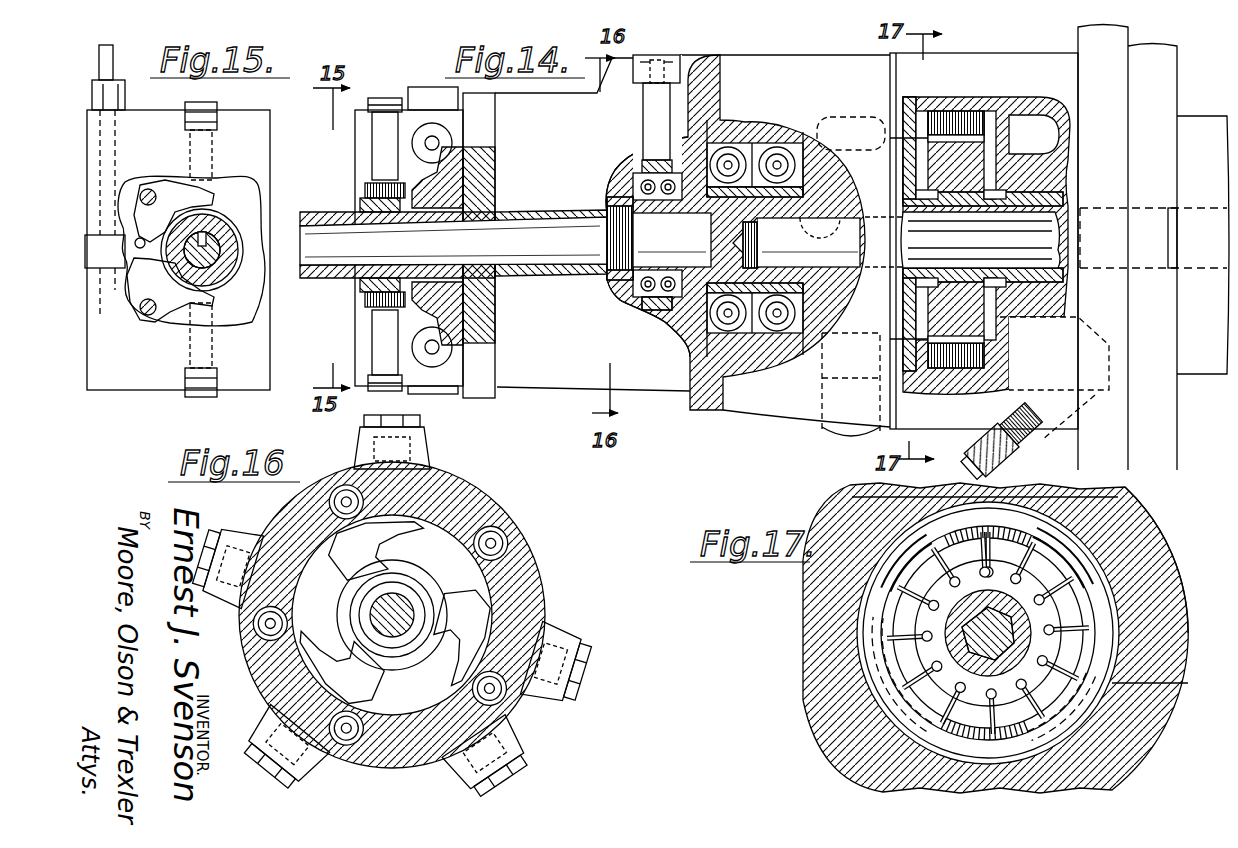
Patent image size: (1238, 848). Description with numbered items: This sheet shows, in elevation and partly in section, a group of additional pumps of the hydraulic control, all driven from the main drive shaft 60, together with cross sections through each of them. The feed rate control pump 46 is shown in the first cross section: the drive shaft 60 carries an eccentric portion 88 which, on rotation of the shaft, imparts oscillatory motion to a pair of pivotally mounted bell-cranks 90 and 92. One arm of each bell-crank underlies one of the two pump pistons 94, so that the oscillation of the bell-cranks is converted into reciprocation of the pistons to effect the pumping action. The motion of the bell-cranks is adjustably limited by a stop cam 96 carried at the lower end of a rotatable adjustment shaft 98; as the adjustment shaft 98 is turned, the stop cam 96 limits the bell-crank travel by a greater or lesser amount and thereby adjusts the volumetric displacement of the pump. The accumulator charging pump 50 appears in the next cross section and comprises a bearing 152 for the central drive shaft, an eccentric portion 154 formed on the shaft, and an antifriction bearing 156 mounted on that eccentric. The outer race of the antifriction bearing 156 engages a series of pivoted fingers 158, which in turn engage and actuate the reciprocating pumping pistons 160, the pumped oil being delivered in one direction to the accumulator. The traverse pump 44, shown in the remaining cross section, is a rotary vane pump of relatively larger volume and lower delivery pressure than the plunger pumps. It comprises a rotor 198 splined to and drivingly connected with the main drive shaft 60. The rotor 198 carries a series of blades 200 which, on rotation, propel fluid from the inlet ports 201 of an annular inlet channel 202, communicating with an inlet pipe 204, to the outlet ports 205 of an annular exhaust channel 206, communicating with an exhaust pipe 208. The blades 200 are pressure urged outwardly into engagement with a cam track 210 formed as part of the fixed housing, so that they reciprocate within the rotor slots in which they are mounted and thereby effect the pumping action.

In FIG. 14, the traverse pump 44 is at (984, 57).
In FIG. 17, the traverse pump 44 is at (808, 673).
In FIG. 15, the feed rate control pump 46 is at (120, 378).
In FIG. 14, the feed rate control pump 46 is at (360, 330).
In FIG. 14, the accumulator charging pump 50 is at (666, 376).
In FIG. 16, the accumulator charging pump 50 is at (532, 676).
In FIG. 15, the drive shaft 60 is at (212, 245).
In FIG. 14, the drive shaft 60 is at (334, 270).
In FIG. 16, the drive shaft 60 is at (396, 606).
In FIG. 17, the drive shaft 60 is at (1000, 612).
In FIG. 15, the eccentric portion 88 is at (210, 220).
In FIG. 14, the eccentric portion 88 is at (372, 210).
In FIG. 15, the bell-crank 90 is at (172, 185).
In FIG. 14, the bell-crank 90 is at (370, 190).
In FIG. 15, the bell-crank 92 is at (168, 308).
In FIG. 15, the pump pistons 94 is at (214, 168).
In FIG. 14, the pump pistons 94 is at (372, 150).
In FIG. 15, the stop cam 96 is at (108, 300).
In FIG. 15, the adjustment shaft 98 is at (99, 64).
In FIG. 14, the bearing 152 is at (763, 140).
In FIG. 14, the eccentric portion 154 is at (638, 292).
In FIG. 14, the antifriction bearing 156 is at (655, 304).
In FIG. 14, the pivoted fingers 158 is at (614, 172).
In FIG. 16, the pivoted fingers 158 is at (438, 522).
In FIG. 14, the pumping pistons 160 is at (640, 118).
In FIG. 16, the pumping pistons 160 is at (428, 470).
In FIG. 14, the rotor 198 is at (986, 245).
In FIG. 17, the rotor 198 is at (1072, 640).
In FIG. 14, the blades 200 is at (950, 112).
In FIG. 17, the blades 200 is at (912, 622).
In FIG. 17, the inlet ports 201 is at (1086, 512).
In FIG. 14, the annular inlet channel 202 is at (1028, 117).
In FIG. 14, the inlet pipe 204 is at (975, 458).
In FIG. 17, the outlet ports 205 is at (880, 583).
In FIG. 14, the annular exhaust channel 206 is at (848, 120).
In FIG. 14, the exhaust pipe 208 is at (836, 438).
In FIG. 14, the cam track 210 is at (935, 110).
In FIG. 17, the cam track 210 is at (1150, 590).